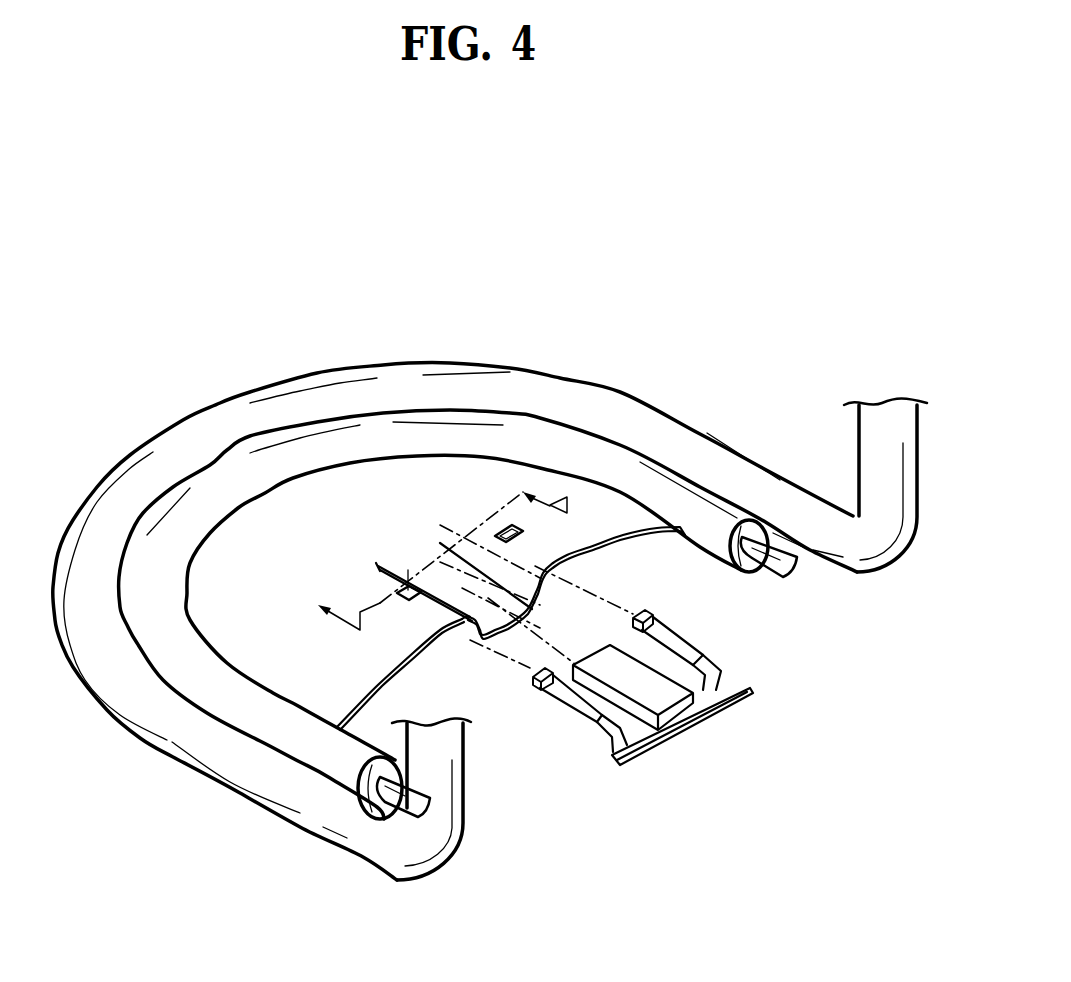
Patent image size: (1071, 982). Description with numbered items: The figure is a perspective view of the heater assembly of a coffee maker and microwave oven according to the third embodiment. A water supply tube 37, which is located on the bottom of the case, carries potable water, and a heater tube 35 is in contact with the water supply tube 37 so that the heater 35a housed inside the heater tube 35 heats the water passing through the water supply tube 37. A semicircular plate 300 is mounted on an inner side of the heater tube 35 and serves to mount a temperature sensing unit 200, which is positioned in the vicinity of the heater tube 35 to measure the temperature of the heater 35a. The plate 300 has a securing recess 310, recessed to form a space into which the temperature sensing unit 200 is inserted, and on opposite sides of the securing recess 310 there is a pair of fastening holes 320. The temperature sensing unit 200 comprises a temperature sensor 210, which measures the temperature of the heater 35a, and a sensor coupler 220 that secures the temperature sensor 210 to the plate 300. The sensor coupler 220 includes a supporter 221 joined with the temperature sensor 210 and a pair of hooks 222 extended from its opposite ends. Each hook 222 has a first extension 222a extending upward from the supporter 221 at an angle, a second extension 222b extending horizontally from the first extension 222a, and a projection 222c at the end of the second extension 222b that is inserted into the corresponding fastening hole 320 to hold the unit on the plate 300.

The heater tube 35 is at (270, 472).
The heater 35a is at (797, 565).
The water supply tube 37 is at (650, 421).
The plate 300 is at (456, 474).
The securing recess 310 is at (432, 573).
The fastening holes 320 is at (502, 527).
The temperature sensing unit 200 is at (661, 757).
The temperature sensor 210 is at (670, 697).
The sensor coupler 220 is at (661, 757).
The supporter 221 is at (733, 683).
The hooks 222 is at (632, 757).
The first extension 222a is at (613, 731).
The second extension 222b is at (573, 697).
The projection 222c is at (533, 662).